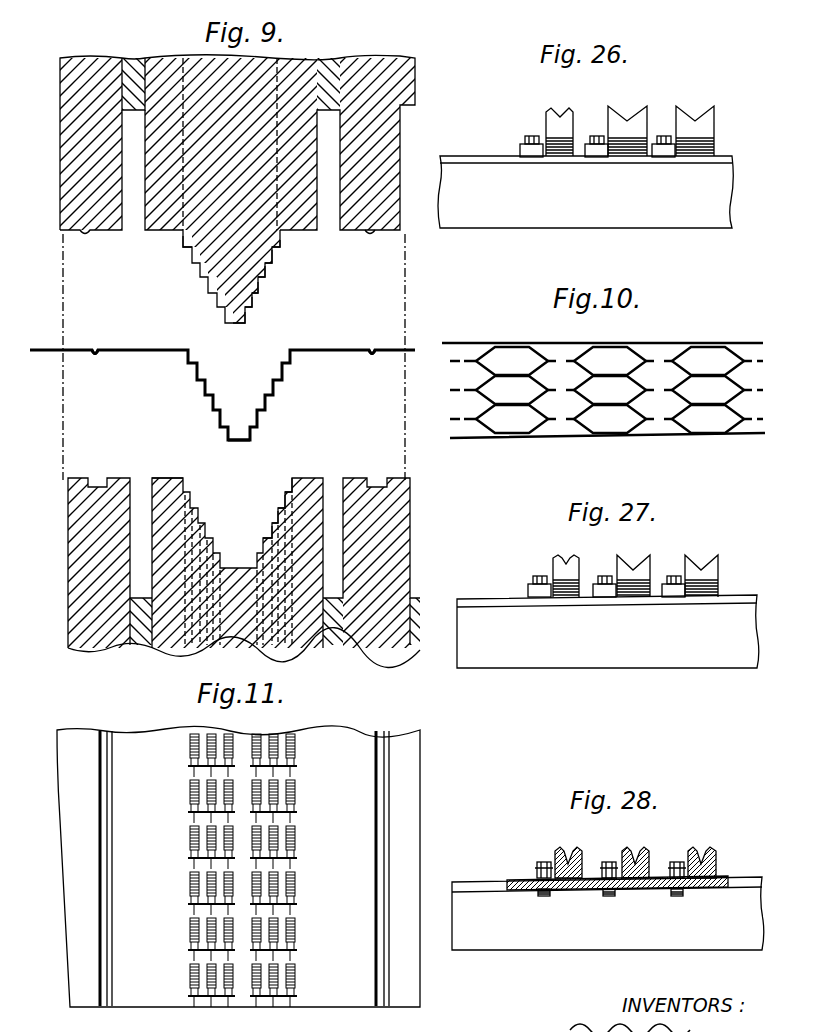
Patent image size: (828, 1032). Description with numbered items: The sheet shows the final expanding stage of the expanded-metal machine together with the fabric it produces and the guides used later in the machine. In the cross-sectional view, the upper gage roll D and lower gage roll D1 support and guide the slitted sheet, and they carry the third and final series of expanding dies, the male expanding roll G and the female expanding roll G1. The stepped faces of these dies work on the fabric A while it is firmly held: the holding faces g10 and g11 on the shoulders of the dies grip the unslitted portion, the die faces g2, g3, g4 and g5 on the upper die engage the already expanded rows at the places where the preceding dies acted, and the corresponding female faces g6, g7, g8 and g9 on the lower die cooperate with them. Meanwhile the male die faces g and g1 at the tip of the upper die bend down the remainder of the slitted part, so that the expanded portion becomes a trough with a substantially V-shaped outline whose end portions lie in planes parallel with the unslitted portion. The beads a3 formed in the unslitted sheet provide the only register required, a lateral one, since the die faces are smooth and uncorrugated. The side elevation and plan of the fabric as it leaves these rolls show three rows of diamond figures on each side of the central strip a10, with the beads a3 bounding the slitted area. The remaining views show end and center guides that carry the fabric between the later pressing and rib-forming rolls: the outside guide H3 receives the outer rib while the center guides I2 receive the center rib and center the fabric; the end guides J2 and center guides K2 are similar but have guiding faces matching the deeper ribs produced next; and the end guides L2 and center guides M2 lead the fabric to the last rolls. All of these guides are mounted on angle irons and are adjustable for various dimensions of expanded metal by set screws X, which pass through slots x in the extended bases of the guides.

In FIG. 9, the gage roll D is at (60, 78).
In FIG. 9, the expanding roll G is at (198, 72).
In FIG. 9, the male die face g is at (234, 325).
In FIG. 9, the male die face g1 is at (246, 318).
In FIG. 9, the die face g2 is at (250, 301).
In FIG. 9, the die face g3 is at (262, 285).
In FIG. 9, the die face g4 is at (268, 258).
In FIG. 9, the die face g5 is at (274, 249).
In FIG. 9, the holding face g10 is at (172, 237).
In FIG. 9, the bead a3 is at (95, 349).
In FIG. 11, the bead a3 is at (98, 869).
In FIG. 9, the sheet metal blank A is at (398, 349).
In FIG. 11, the sheet metal blank A is at (238, 866).
In FIG. 9, the central strip a10 is at (233, 441).
In FIG. 10, the central strip a10 is at (578, 440).
In FIG. 9, the gage roll D1 is at (70, 601).
In FIG. 9, the expanding roll G1 is at (247, 640).
In FIG. 9, the female die face g6 is at (263, 538).
In FIG. 9, the female die face g7 is at (270, 522).
In FIG. 9, the female die face g8 is at (278, 508).
In FIG. 9, the female die face g9 is at (287, 493).
In FIG. 9, the holding face g11 is at (174, 456).
In FIG. 26, the outside guide H3 is at (562, 118).
In FIG. 26, the center guide I2 is at (688, 112).
In FIG. 27, the end guide J2 is at (556, 558).
In FIG. 27, the center guide K2 is at (693, 556).
In FIG. 28, the end guide L2 is at (556, 850).
In FIG. 28, the center guide M2 is at (692, 856).
In FIG. 28, the set screw X is at (537, 868).
In FIG. 28, the slot x is at (522, 890).